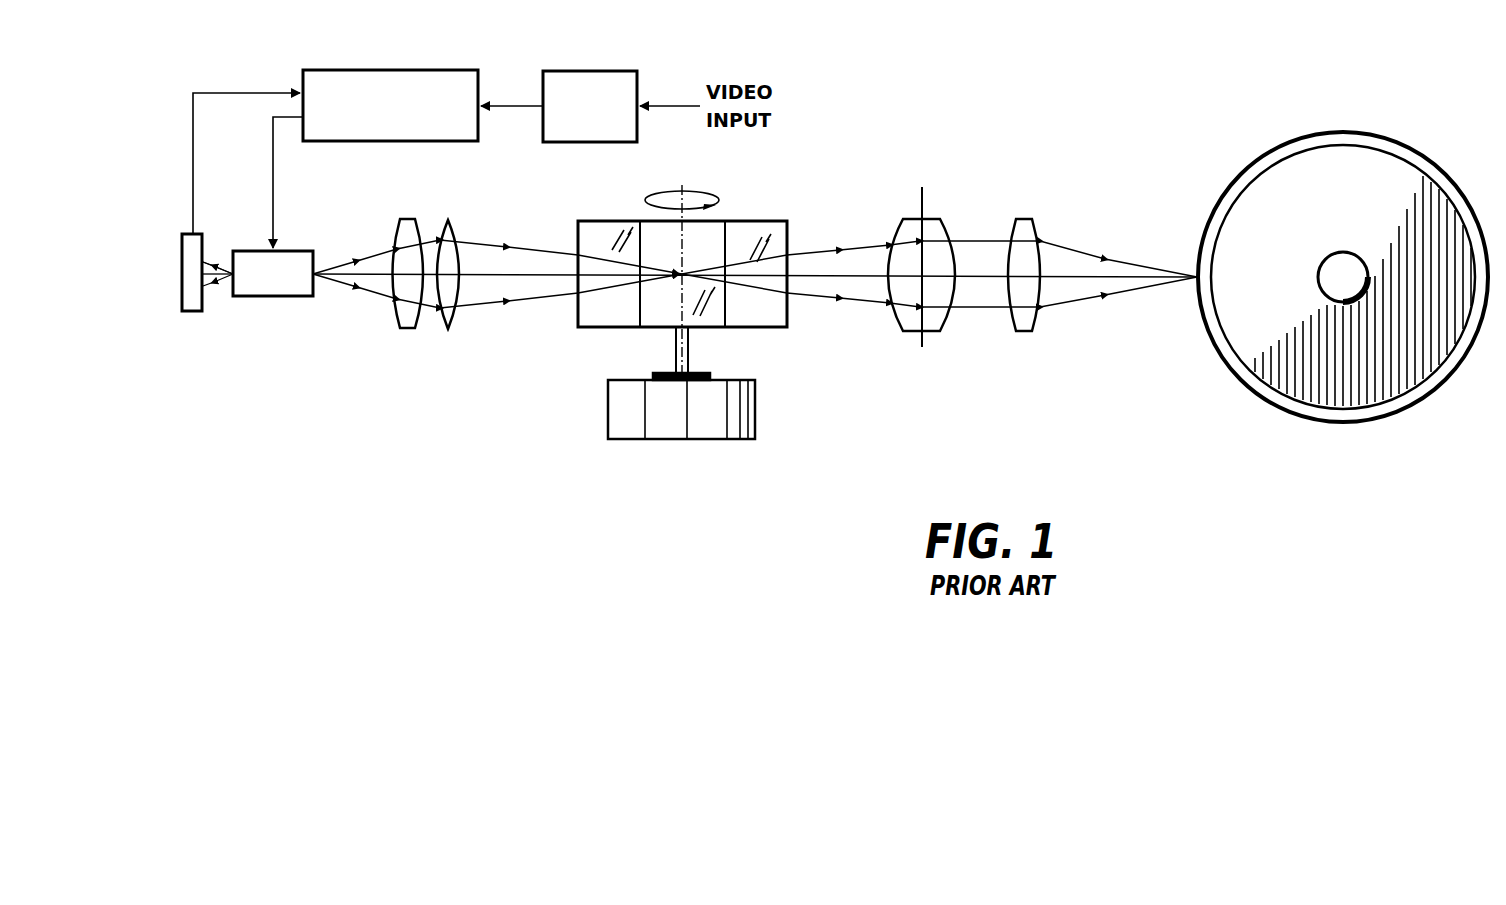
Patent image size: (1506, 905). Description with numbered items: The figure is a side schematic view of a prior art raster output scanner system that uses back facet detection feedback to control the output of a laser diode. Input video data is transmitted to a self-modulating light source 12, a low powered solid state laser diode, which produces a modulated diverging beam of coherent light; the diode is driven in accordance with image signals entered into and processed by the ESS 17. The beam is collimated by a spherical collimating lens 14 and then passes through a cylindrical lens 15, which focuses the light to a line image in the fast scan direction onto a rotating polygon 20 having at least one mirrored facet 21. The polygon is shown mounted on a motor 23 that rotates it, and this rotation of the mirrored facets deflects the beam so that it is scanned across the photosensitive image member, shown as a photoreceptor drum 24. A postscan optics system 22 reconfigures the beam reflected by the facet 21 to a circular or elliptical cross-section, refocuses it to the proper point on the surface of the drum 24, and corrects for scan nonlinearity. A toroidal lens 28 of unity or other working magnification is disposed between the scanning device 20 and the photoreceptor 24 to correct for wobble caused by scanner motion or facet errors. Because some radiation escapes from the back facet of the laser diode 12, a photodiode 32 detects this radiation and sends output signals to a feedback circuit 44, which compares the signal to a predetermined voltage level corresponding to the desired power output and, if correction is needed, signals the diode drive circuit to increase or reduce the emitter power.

The self-modulating light source 12 is at (272, 298).
The spherical collimating lens 14 is at (408, 219).
The cylindrical lens 15 is at (449, 220).
The ESS 17 is at (563, 71).
The rotating polygon 20 is at (612, 328).
The mirrored facet 21 is at (720, 226).
The postscan optics system 22 is at (921, 219).
The polygon drive motor 23 is at (704, 440).
The photoreceptor drum 24 is at (1234, 180).
The toroidal lens 28 is at (1023, 219).
The photodiode 32 is at (192, 312).
The feedback circuit 44 is at (428, 70).